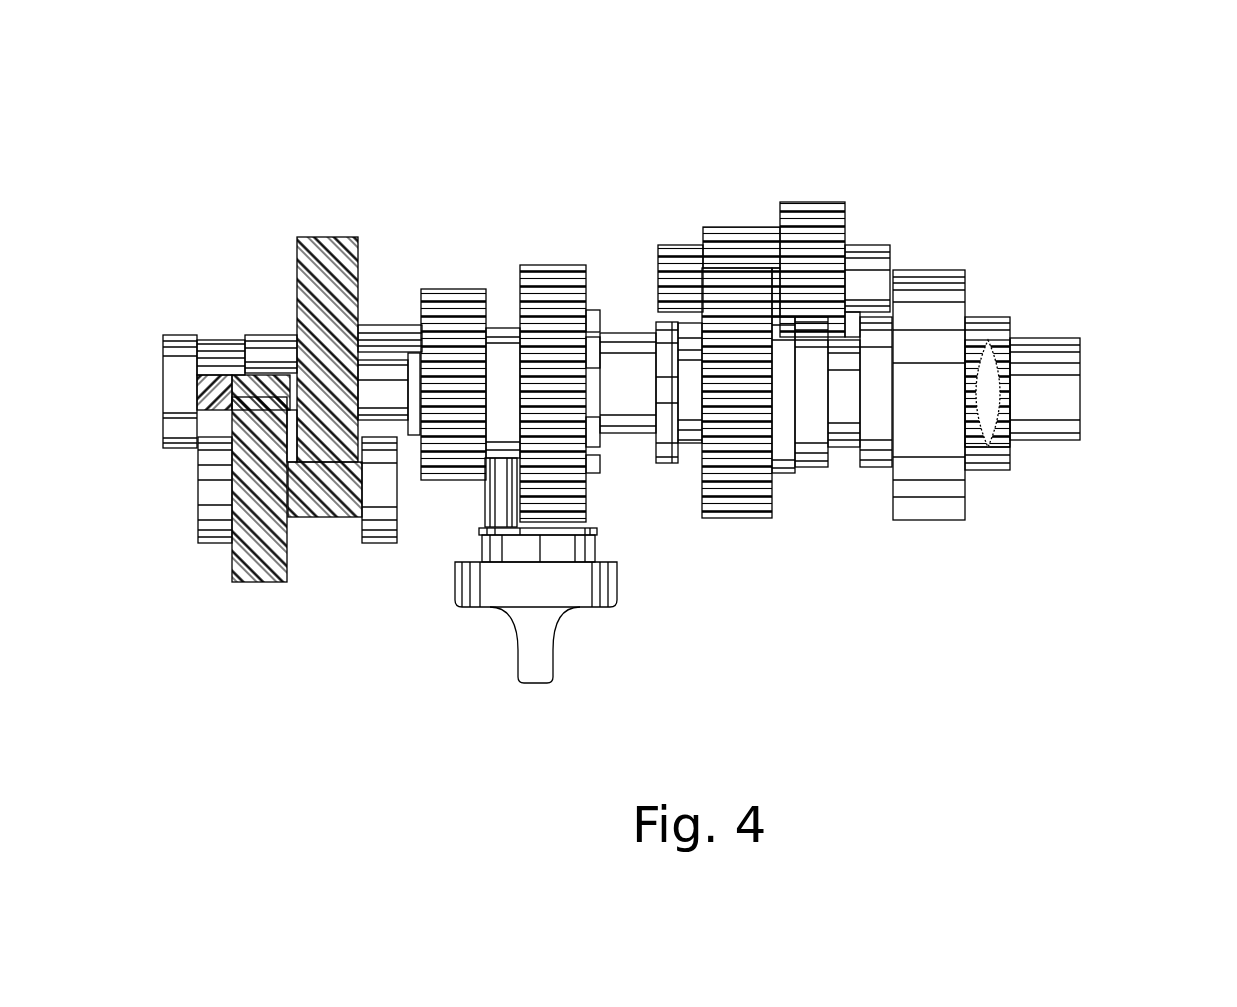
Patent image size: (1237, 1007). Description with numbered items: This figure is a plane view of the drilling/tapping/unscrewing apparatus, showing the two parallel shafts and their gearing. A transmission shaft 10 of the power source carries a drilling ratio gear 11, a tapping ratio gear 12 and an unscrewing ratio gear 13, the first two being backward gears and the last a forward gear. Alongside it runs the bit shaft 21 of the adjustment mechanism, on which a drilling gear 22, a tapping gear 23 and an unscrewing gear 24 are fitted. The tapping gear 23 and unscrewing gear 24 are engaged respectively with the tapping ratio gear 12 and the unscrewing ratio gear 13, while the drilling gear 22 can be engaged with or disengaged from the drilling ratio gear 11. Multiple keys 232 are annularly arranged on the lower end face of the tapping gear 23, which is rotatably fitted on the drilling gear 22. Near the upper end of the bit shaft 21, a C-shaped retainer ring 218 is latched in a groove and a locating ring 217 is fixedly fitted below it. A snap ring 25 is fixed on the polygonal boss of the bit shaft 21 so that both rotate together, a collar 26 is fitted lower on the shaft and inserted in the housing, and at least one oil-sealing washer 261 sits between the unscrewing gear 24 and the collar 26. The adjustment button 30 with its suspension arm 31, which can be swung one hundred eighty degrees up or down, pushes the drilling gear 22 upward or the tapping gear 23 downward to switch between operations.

The transmission shaft 10 is at (163, 392).
The drilling ratio gear 11 is at (450, 298).
The tapping ratio gear 12 is at (622, 343).
The unscrewing ratio gear 13 is at (740, 227).
The bit shaft 21 is at (1072, 397).
The drilling gear 22 is at (433, 322).
The tapping gear 23 is at (551, 280).
The unscrewing gear 24 is at (738, 507).
The snap ring 25 is at (668, 457).
The collar 26 is at (940, 293).
The locating ring 217 is at (417, 433).
The C-shaped retainer ring 218 is at (408, 425).
The keys 232 is at (597, 442).
The adjustment button 30 is at (510, 610).
The suspension arm 31 is at (490, 510).
The oil-sealing washer 261 is at (880, 460).